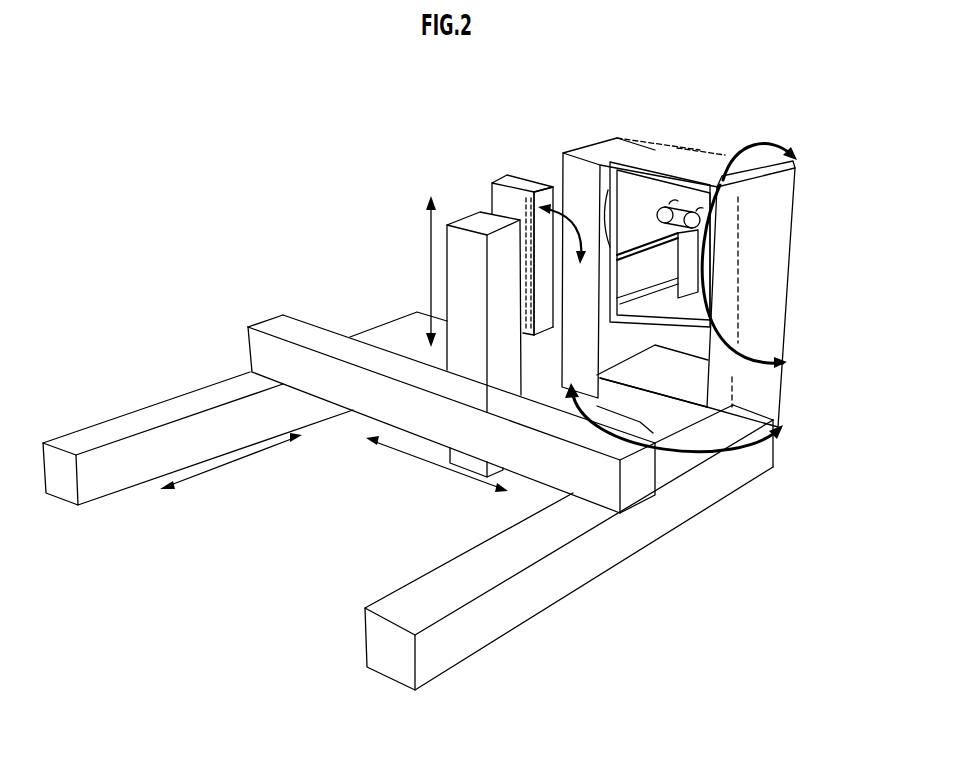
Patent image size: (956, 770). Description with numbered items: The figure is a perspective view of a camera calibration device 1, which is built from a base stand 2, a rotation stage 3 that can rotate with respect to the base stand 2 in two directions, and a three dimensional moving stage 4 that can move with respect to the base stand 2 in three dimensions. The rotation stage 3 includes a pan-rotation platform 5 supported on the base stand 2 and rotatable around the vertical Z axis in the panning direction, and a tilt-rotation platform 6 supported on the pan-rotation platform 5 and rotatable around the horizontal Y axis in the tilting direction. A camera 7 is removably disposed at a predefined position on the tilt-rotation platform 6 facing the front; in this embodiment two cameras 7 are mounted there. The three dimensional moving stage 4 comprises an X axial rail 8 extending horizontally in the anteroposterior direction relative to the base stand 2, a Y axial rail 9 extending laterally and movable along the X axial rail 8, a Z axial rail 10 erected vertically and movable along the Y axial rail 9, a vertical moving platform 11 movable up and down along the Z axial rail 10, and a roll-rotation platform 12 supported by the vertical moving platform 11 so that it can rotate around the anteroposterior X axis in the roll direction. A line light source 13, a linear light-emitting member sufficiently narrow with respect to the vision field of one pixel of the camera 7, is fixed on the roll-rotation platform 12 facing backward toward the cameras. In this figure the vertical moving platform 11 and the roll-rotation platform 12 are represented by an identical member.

The camera calibration device 1 is at (278, 238).
The base stand 2 is at (667, 437).
The rotation stage 3 is at (808, 263).
The three dimensional moving stage 4 is at (160, 392).
The pan-rotation platform 5 is at (772, 310).
The tilt-rotation platform 6 is at (693, 165).
The camera 7 is at (692, 211).
The X axial rail 8 is at (473, 642).
The Y axial rail 9 is at (275, 318).
The Z axial rail 10 is at (457, 287).
The vertical moving platform 11 is at (498, 195).
The roll-rotation platform 12 is at (494, 245).
The line light source 13 is at (534, 192).